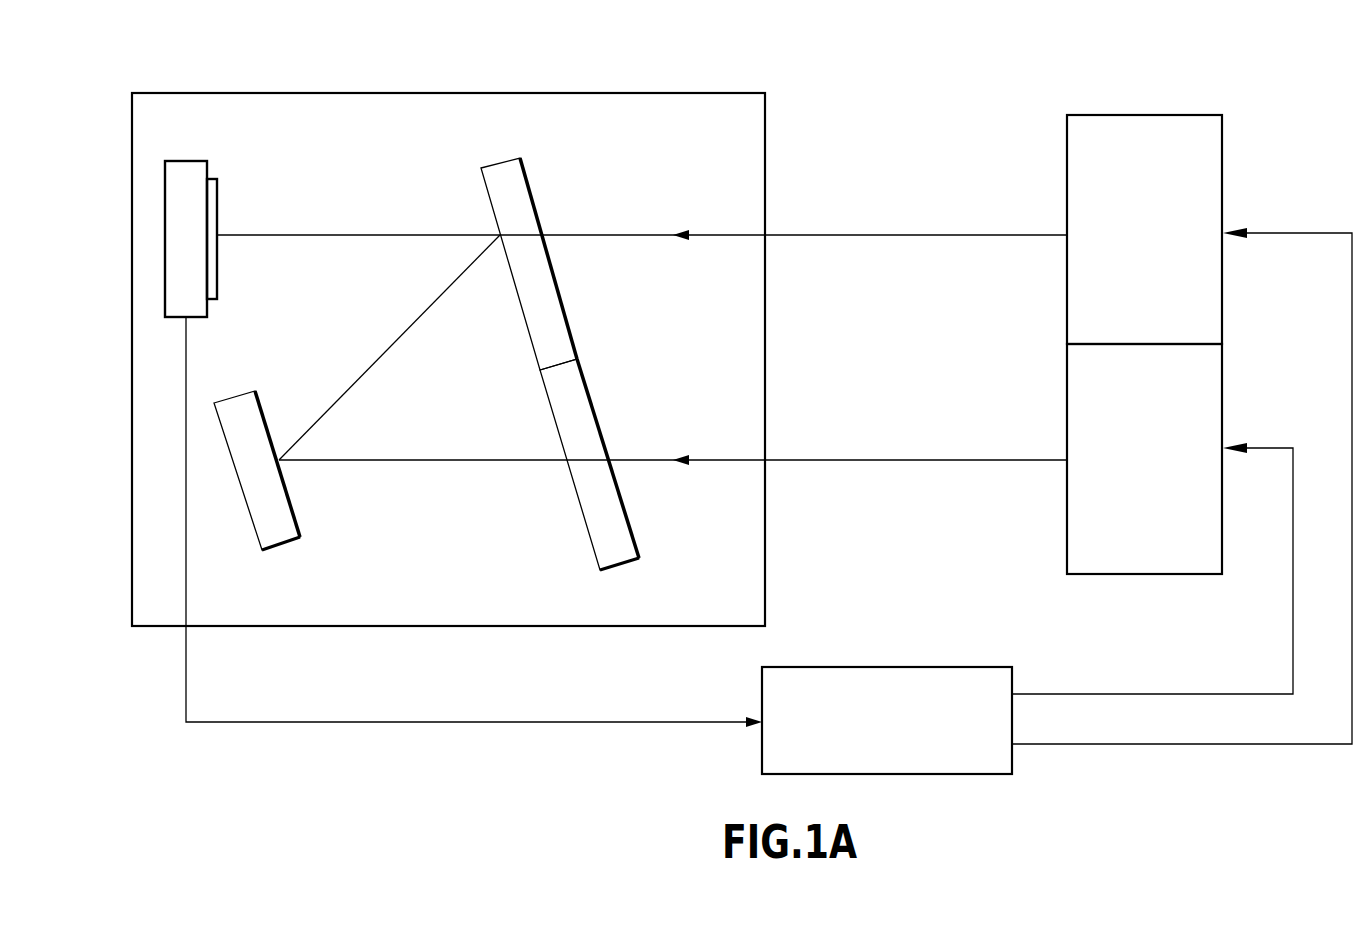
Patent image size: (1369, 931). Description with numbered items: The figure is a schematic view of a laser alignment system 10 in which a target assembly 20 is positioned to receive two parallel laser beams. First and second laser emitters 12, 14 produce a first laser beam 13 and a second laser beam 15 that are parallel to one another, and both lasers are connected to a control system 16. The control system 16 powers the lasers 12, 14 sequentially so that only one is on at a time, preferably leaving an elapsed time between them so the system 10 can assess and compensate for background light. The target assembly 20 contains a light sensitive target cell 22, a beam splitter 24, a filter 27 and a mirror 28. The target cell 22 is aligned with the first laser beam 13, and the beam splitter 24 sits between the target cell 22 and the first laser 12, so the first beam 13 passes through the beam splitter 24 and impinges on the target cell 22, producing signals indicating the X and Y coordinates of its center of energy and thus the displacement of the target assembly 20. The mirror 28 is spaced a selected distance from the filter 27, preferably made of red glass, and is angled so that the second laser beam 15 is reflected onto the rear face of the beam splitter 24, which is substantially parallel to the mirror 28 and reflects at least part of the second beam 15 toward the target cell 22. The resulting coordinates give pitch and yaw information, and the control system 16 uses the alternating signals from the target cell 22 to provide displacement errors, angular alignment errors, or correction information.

The laser alignment system 10 is at (918, 66).
The first laser emitter 12 is at (1122, 115).
The first laser beam 13 is at (895, 235).
The second laser emitter 14 is at (1125, 574).
The second laser beam 15 is at (895, 460).
The control system 16 is at (840, 667).
The target assembly 20 is at (465, 92).
The light sensitive target cell 22 is at (185, 161).
The beam splitter 24 is at (497, 160).
The filter 27 is at (622, 570).
The mirror 28 is at (280, 550).